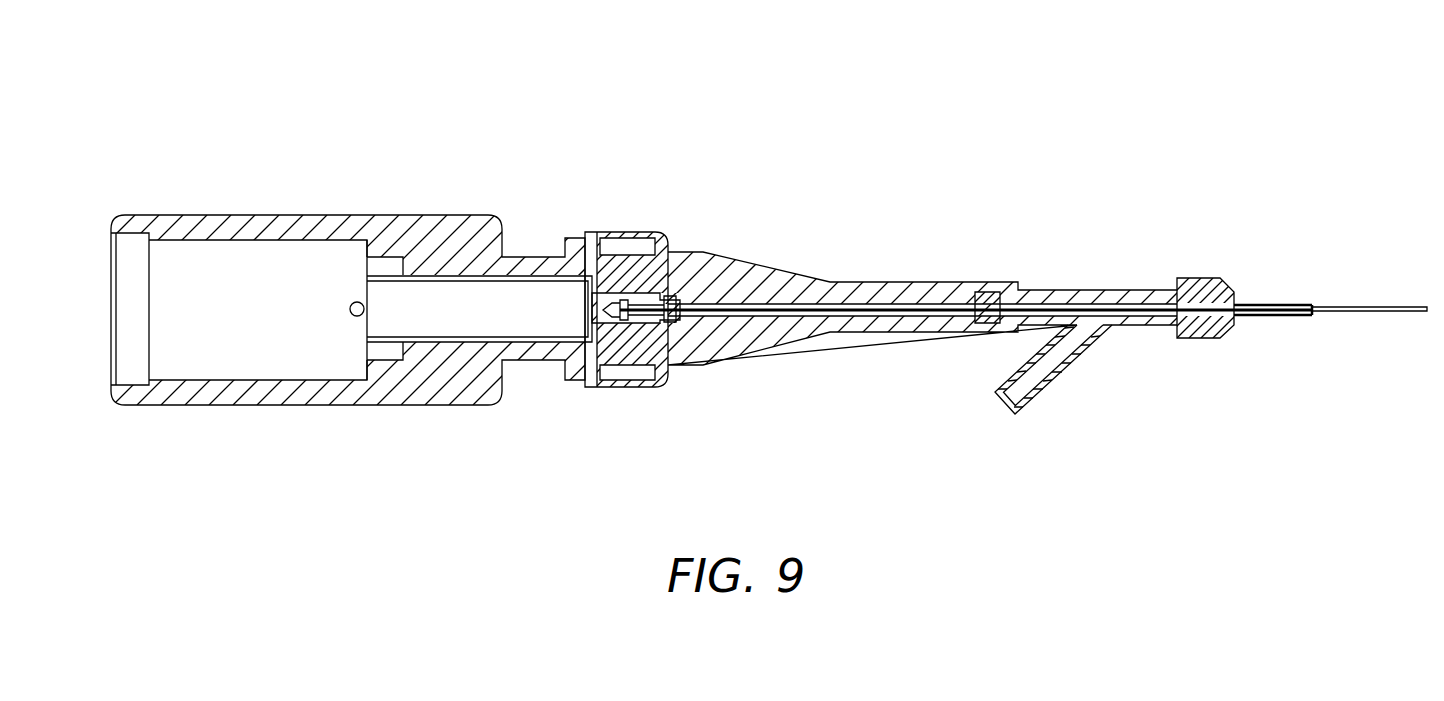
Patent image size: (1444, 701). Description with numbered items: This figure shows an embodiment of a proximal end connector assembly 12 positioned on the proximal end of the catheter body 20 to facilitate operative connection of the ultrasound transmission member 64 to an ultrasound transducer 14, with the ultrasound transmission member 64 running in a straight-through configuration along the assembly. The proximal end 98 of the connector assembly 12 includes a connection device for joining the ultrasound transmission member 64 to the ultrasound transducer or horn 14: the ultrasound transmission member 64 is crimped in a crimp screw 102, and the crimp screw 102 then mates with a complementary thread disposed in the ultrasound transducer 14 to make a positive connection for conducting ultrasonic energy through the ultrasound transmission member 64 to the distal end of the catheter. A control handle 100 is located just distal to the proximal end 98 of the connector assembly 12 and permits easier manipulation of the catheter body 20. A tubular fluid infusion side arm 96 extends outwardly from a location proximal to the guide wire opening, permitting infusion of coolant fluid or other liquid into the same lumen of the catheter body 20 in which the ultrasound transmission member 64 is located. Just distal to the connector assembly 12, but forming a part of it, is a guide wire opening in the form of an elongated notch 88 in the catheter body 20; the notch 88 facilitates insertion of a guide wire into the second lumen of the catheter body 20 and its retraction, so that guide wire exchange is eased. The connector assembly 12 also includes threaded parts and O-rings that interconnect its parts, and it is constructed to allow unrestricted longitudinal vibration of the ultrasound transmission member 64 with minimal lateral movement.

The proximal end connector assembly 12 is at (1297, 73).
The ultrasound transducer 14 is at (233, 214).
The catheter body 20 is at (1383, 309).
The ultrasound transmission member 64 is at (732, 313).
The elongated notch 88 is at (1340, 306).
The tubular fluid infusion side arm 96 is at (1035, 400).
The proximal end 98 is at (687, 251).
The control handle 100 is at (788, 280).
The crimp screw 102 is at (627, 298).